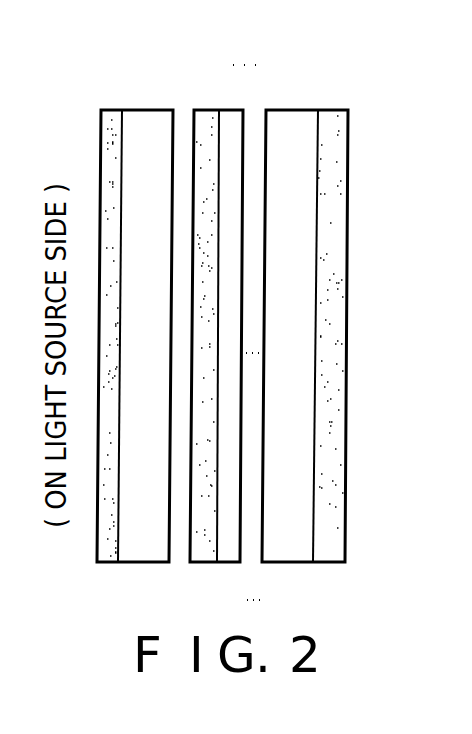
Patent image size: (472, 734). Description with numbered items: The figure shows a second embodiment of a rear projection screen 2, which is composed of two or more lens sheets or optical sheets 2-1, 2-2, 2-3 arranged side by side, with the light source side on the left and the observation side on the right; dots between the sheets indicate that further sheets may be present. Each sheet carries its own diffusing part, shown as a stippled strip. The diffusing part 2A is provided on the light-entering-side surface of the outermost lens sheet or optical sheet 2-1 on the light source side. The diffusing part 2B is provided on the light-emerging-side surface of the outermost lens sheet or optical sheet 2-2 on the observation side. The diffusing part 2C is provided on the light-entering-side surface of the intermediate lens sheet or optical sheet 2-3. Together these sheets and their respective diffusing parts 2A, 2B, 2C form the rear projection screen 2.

The rear projection screen 2 is at (390, 82).
The diffusing part 2A is at (102, 127).
The diffusing part 2B is at (352, 121).
The diffusing part 2C is at (204, 114).
The lens sheet or optical sheet 2-1 is at (142, 555).
The lens sheet or optical sheet 2-2 is at (292, 552).
The lens sheet or optical sheet 2-3 is at (227, 555).